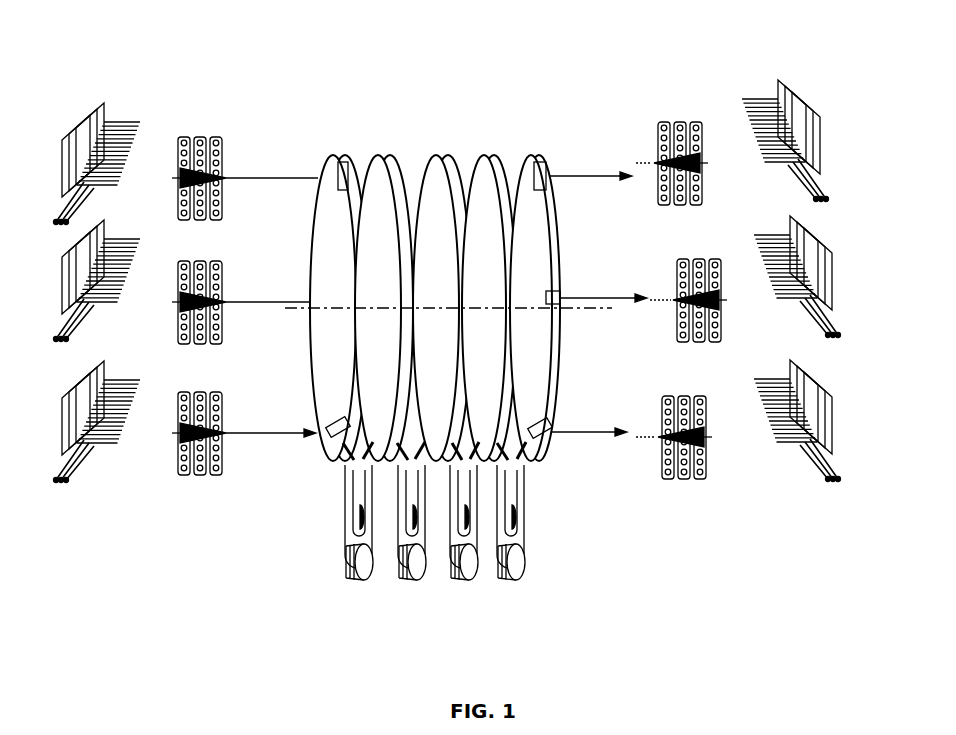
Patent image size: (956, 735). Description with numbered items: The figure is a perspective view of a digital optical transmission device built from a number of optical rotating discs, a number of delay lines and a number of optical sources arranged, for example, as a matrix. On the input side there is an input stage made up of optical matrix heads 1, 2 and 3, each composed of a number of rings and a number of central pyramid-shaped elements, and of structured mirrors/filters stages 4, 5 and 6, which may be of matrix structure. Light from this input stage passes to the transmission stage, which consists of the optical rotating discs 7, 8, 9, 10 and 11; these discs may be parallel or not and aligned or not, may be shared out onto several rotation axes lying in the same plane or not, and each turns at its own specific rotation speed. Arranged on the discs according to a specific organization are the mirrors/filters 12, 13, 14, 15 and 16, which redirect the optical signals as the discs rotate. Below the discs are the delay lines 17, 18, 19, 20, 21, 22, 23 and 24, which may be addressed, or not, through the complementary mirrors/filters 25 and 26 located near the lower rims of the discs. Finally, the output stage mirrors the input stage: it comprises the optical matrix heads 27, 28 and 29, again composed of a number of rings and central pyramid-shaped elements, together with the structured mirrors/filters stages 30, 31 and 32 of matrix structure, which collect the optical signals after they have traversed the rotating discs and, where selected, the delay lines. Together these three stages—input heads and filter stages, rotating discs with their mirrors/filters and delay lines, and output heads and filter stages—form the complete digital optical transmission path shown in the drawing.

The optical matrix head 1 is at (208, 138).
The optical matrix head 2 is at (214, 262).
The optical matrix head 3 is at (193, 478).
The structured mirrors/filters stage 4 is at (100, 115).
The structured mirrors/filters stage 5 is at (98, 250).
The structured mirrors/filters stage 6 is at (77, 440).
The optical rotating disc 7 is at (333, 157).
The optical rotating disc 8 is at (381, 157).
The optical rotating disc 9 is at (440, 157).
The optical rotating disc 10 is at (490, 157).
The optical rotating disc 11 is at (537, 157).
The mirror/filter 12 is at (333, 430).
The mirror/filter 13 is at (345, 165).
The mirror/filter 14 is at (545, 160).
The mirror/filter 15 is at (556, 292).
The mirror/filter 16 is at (547, 432).
The delay line 17 is at (363, 527).
The delay line 18 is at (365, 585).
The delay line 19 is at (415, 533).
The delay line 20 is at (420, 570).
The delay line 21 is at (467, 533).
The delay line 22 is at (472, 573).
The delay line 23 is at (517, 533).
The delay line 24 is at (522, 575).
The complementary mirror/filter 25 is at (347, 457).
The complementary mirror/filter 26 is at (370, 457).
The optical matrix head 27 is at (690, 120).
The optical matrix head 28 is at (680, 330).
The optical matrix head 29 is at (700, 480).
The structured mirrors/filters stage 30 is at (790, 100).
The structured mirrors/filters stage 31 is at (808, 318).
The structured mirrors/filters stage 32 is at (800, 462).